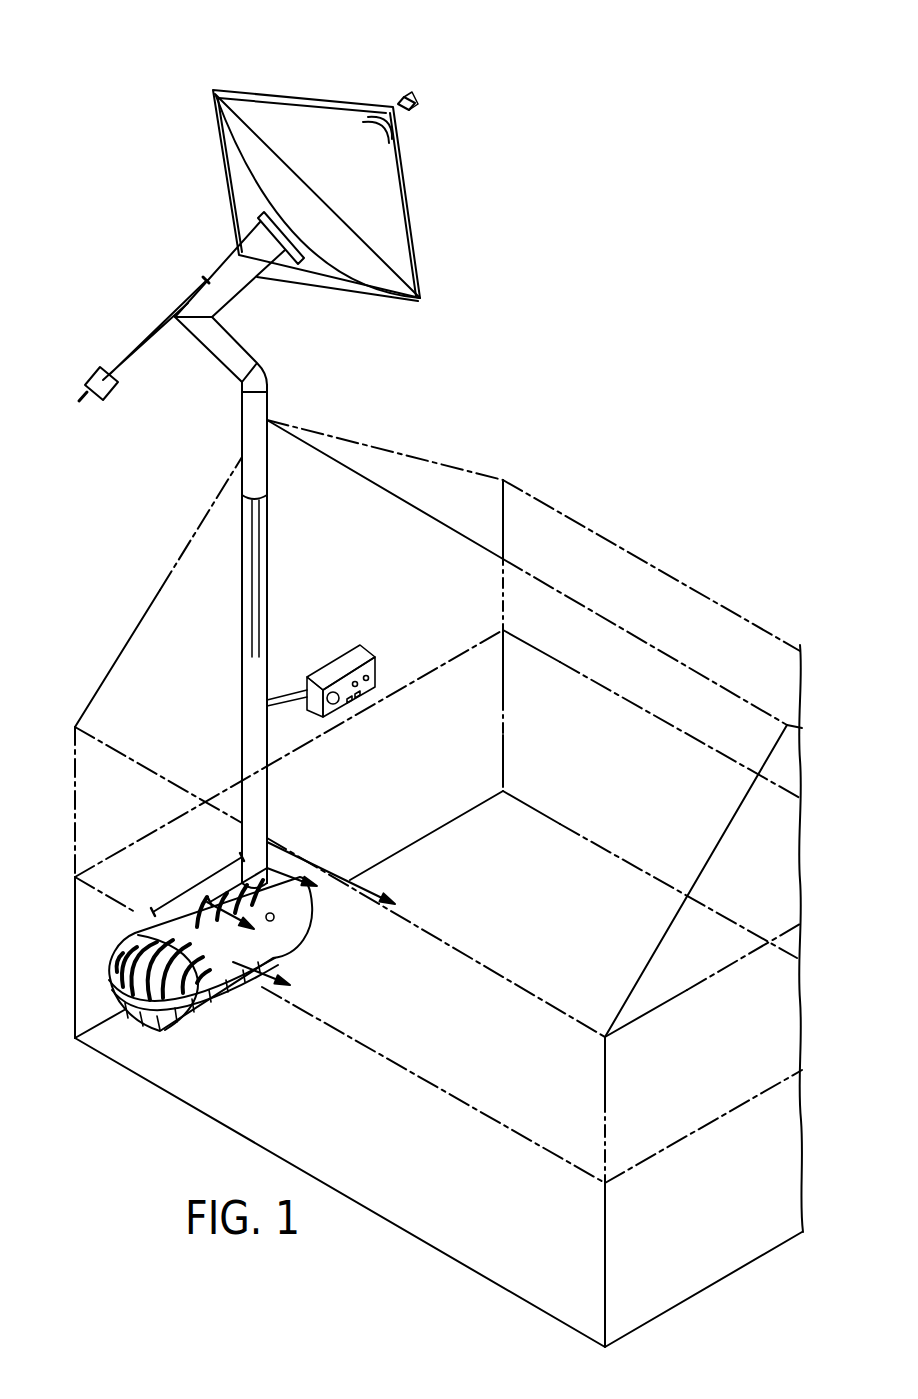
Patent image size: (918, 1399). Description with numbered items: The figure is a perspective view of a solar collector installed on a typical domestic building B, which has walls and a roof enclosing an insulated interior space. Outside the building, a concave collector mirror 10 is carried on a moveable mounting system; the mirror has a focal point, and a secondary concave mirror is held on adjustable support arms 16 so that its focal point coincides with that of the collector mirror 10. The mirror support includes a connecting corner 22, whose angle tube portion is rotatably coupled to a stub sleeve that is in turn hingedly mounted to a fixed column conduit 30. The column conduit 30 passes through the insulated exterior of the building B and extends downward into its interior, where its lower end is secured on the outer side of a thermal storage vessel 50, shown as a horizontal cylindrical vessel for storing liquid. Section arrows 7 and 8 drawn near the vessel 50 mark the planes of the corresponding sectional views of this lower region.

The concave collector mirror 10 is at (200, 171).
The adjustable support arms 16 is at (307, 98).
The connecting corner 22 is at (165, 292).
The fixed column conduit 30 is at (242, 440).
The thermal storage vessel 50 is at (218, 995).
The section line 7- 7 is at (315, 918).
The section line 8- 8 is at (274, 901).
The building B is at (187, 607).